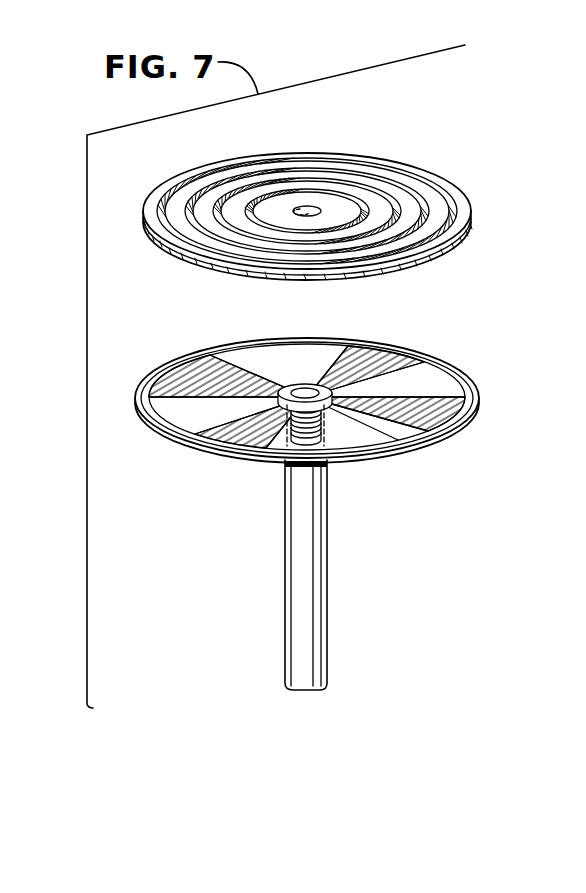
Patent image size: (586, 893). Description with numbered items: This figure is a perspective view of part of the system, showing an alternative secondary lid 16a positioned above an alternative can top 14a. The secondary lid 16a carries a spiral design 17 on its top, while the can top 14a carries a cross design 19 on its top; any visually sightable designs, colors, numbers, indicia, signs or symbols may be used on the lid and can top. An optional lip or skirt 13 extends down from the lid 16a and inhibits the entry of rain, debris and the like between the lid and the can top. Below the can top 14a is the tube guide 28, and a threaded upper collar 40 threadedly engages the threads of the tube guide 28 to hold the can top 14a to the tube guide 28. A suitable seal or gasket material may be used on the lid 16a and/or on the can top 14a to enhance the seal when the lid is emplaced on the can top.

The lip or skirt 13 is at (351, 217).
The secondary lid 16a is at (341, 217).
The spiral design 17 is at (413, 240).
The can top 14a is at (343, 407).
The cross design 19 is at (336, 405).
The threaded upper collar 40 is at (388, 445).
The tube guide 28 is at (320, 559).